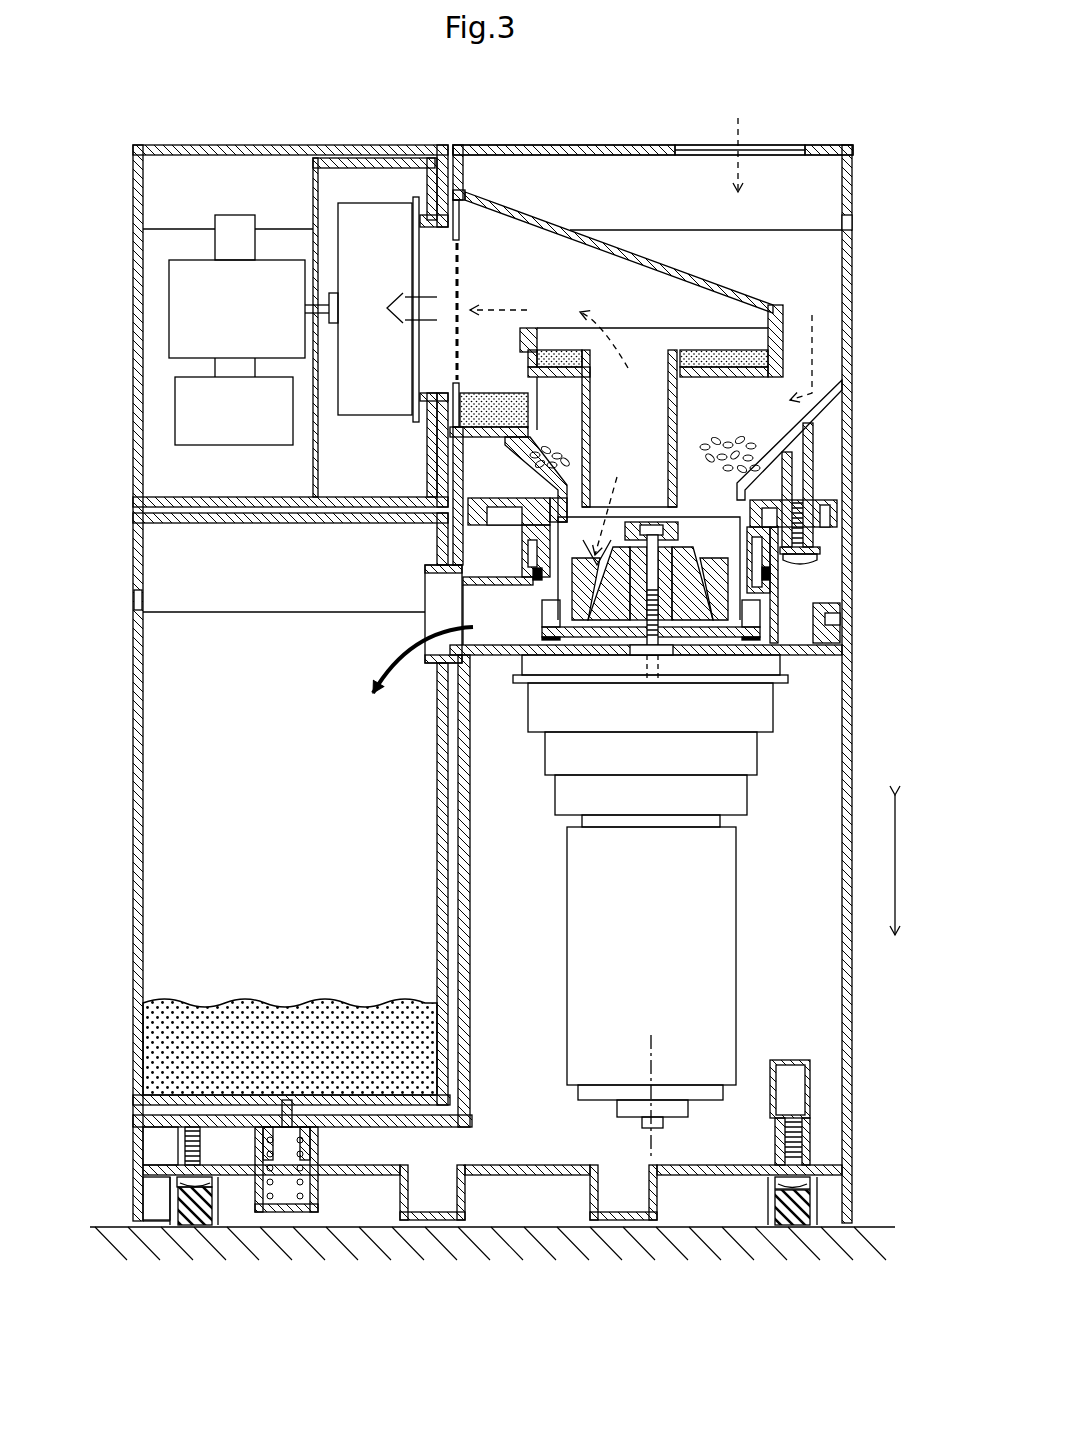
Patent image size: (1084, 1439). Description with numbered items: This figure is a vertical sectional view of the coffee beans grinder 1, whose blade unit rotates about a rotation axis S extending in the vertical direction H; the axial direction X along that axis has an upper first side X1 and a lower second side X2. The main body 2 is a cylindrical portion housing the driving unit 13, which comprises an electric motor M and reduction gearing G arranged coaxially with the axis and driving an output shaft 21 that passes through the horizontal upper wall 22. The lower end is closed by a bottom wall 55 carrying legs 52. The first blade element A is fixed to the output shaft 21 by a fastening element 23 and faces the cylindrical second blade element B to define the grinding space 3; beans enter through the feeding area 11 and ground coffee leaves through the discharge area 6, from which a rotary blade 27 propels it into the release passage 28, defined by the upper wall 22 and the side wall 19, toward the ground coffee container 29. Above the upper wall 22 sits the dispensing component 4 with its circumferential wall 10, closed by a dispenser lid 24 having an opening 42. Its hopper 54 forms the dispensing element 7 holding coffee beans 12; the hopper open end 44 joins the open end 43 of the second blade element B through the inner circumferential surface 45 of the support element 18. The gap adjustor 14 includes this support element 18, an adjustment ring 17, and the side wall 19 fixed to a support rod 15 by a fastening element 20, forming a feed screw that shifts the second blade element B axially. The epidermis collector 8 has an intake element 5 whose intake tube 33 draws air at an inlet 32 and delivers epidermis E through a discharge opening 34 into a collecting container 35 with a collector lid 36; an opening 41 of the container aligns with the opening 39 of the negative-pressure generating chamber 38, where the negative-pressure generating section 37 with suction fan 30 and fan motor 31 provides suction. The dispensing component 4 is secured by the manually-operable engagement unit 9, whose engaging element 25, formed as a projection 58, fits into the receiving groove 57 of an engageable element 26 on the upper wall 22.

The coffee beans grinder 1 is at (552, 103).
The main body 2 is at (853, 1000).
The grinding space 3 is at (560, 580).
The dispensing component 4 is at (855, 340).
The intake element 5 is at (700, 355).
The discharge area 6 is at (568, 622).
The dispensing element 7 is at (830, 395).
The epidermis collector 8 is at (716, 282).
The manually-operable engagement unit 9 is at (852, 661).
The circumferential wall 10 is at (852, 265).
The feeding area 11 is at (592, 545).
The coffee beans 12 is at (288, 1020).
The driving unit 13 is at (555, 915).
The gap adjustor 14 is at (822, 553).
The support rod 15 is at (808, 470).
The adjustment ring 17 is at (822, 503).
The support element 18 is at (508, 530).
The side wall 19 is at (830, 628).
The fastening element 20 is at (810, 560).
The output shaft 21 is at (660, 655).
The upper wall 22 is at (500, 657).
The fastening element 23 is at (650, 522).
The dispenser lid 24 is at (600, 150).
The engaging element 25 is at (852, 660).
The engageable element 26 is at (800, 657).
The rotary blade 27 is at (548, 628).
The release passage 28 is at (430, 592).
The ground coffee container 29 is at (138, 600).
The suction fan 30 is at (375, 400).
The fan motor 31 is at (175, 312).
The inlet 32 is at (680, 380).
The intake tube 33 is at (545, 350).
The discharge opening 34 is at (650, 365).
The collecting container 35 is at (778, 312).
The collector lid 36 is at (688, 258).
The negative-pressure generating section 37 is at (280, 195).
The negative-pressure generating chamber 38 is at (370, 148).
The opening 39 is at (457, 258).
The opening 41 is at (460, 282).
The opening 42 is at (795, 152).
The open end 43 is at (780, 592).
The open end 44 is at (728, 545).
The inner circumferential surface 45 is at (713, 555).
The leg 52 is at (195, 1240).
The hopper 54 is at (822, 428).
The bottom wall 55 is at (545, 1177).
The receiving groove 57 is at (826, 642).
The projection 58 is at (852, 661).
The first blade element A is at (600, 600).
The second blade element B is at (712, 610).
The epidermis E is at (490, 393).
The reduction gearing G is at (762, 800).
The electric motor M is at (715, 940).
The rotation axis S is at (655, 1142).
The vertical direction H is at (880, 866).
The axial direction X is at (904, 865).
The first side X1 is at (895, 776).
The second side X2 is at (895, 956).